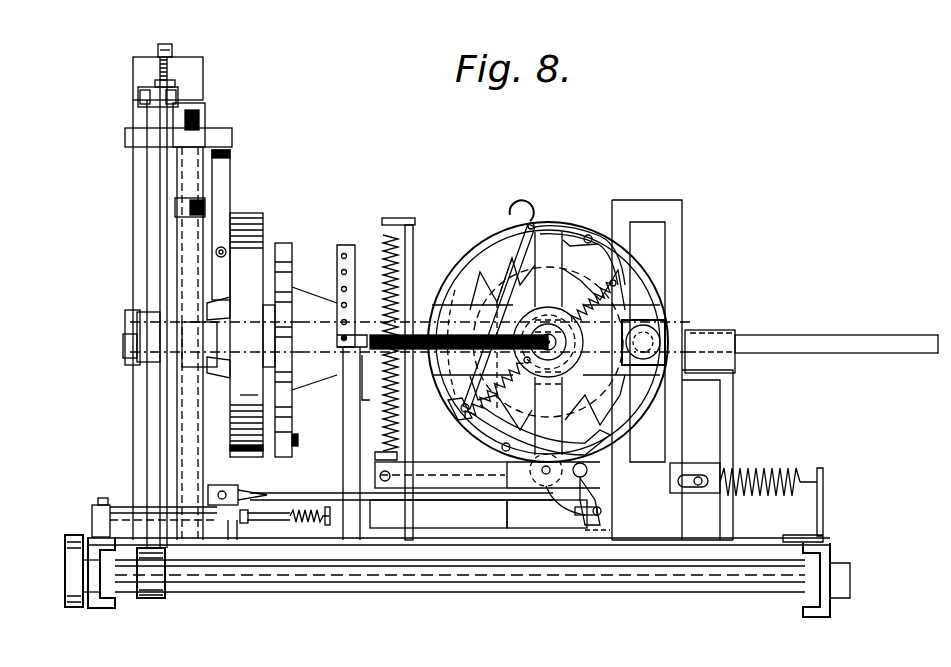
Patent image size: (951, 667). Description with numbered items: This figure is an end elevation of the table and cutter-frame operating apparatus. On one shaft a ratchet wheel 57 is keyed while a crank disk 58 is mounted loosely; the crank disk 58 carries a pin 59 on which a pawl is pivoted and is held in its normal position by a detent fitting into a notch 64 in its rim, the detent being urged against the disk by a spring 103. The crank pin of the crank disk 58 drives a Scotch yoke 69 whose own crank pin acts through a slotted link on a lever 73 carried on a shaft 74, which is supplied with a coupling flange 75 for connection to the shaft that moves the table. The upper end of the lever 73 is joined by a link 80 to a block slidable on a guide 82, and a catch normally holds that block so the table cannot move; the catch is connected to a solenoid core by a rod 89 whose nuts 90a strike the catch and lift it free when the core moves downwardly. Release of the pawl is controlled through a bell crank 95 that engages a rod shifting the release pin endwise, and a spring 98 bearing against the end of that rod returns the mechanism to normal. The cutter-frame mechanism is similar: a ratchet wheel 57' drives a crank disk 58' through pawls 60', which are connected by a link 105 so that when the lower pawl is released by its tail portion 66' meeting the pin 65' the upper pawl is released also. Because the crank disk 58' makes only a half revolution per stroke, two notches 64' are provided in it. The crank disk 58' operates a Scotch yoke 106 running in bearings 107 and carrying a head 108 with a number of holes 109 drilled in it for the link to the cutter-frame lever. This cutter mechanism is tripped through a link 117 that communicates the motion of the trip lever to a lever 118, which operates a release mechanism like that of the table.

The rod 89 is at (164, 44).
The nuts 90a is at (172, 50).
The link 80 is at (180, 97).
The guide 82 is at (193, 118).
The lever 73 is at (157, 201).
The Scotch yoke 69 is at (188, 337).
The crank disk 58 is at (252, 322).
The ratchet wheel 57 is at (306, 334).
The pin 59 is at (298, 441).
The head 108 is at (348, 245).
The holes 109 is at (341, 270).
The spring 103 is at (398, 243).
The link 105 is at (528, 245).
The ratchet wheel 57' is at (535, 330).
The crank disk 58' is at (547, 342).
The notches 64' is at (580, 238).
The notch 64 is at (540, 426).
The pawls 60' is at (580, 355).
The Scotch yoke 106 is at (676, 234).
The bearings 107 is at (724, 325).
The tail portion 66' is at (487, 471).
The lever 118 is at (476, 497).
The pin 65' is at (558, 504).
The bell crank 95 is at (98, 524).
The coupling flange 75 is at (65, 553).
The link 117 is at (233, 524).
The spring 98 is at (322, 522).
The shaft 74 is at (478, 576).